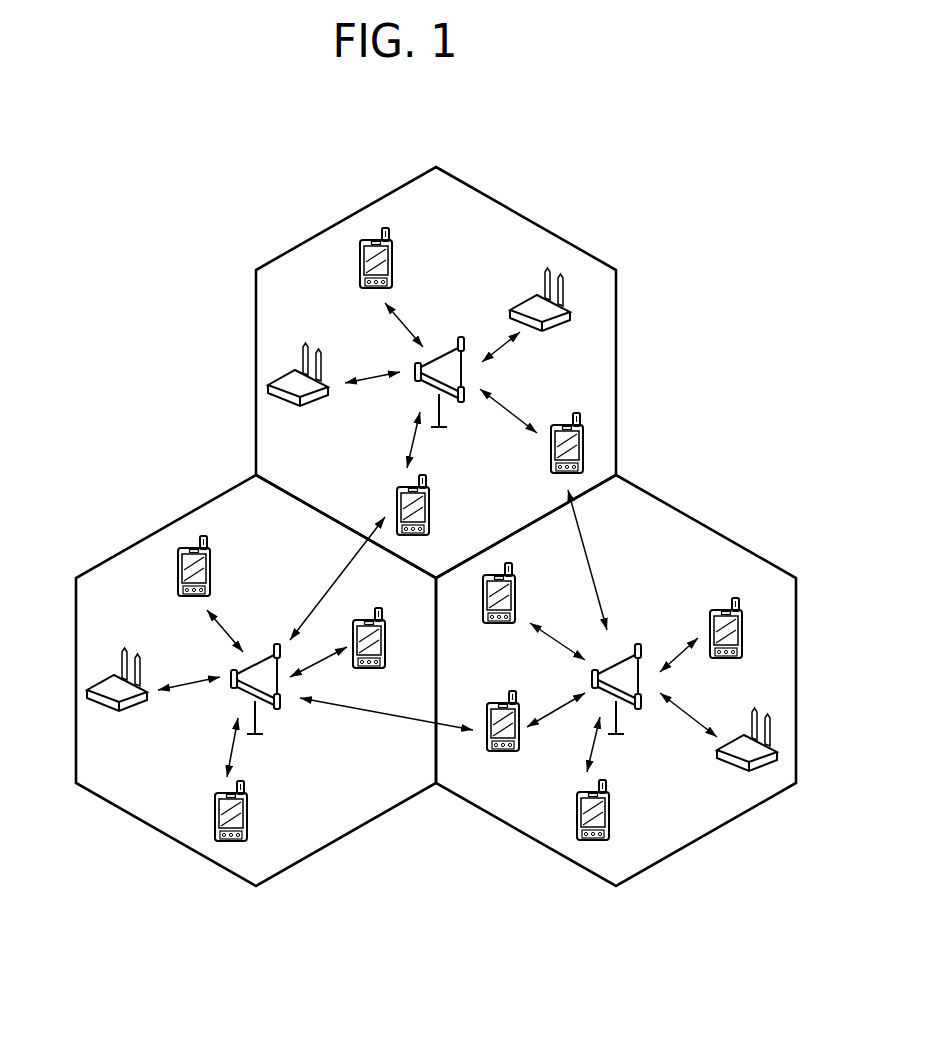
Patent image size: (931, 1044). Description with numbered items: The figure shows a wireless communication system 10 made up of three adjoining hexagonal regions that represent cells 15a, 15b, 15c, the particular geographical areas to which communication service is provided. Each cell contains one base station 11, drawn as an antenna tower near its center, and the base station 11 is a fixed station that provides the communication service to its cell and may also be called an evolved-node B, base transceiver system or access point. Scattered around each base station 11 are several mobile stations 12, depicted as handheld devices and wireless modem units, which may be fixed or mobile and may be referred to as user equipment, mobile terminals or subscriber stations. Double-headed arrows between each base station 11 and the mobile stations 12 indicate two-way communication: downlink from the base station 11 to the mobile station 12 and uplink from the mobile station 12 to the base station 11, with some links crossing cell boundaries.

The wireless communication system 10 is at (697, 271).
The base station 11 is at (456, 338).
The mobile station 12 is at (392, 264).
The cell 15a is at (617, 363).
The cell 15b is at (732, 540).
The cell 15c is at (137, 541).